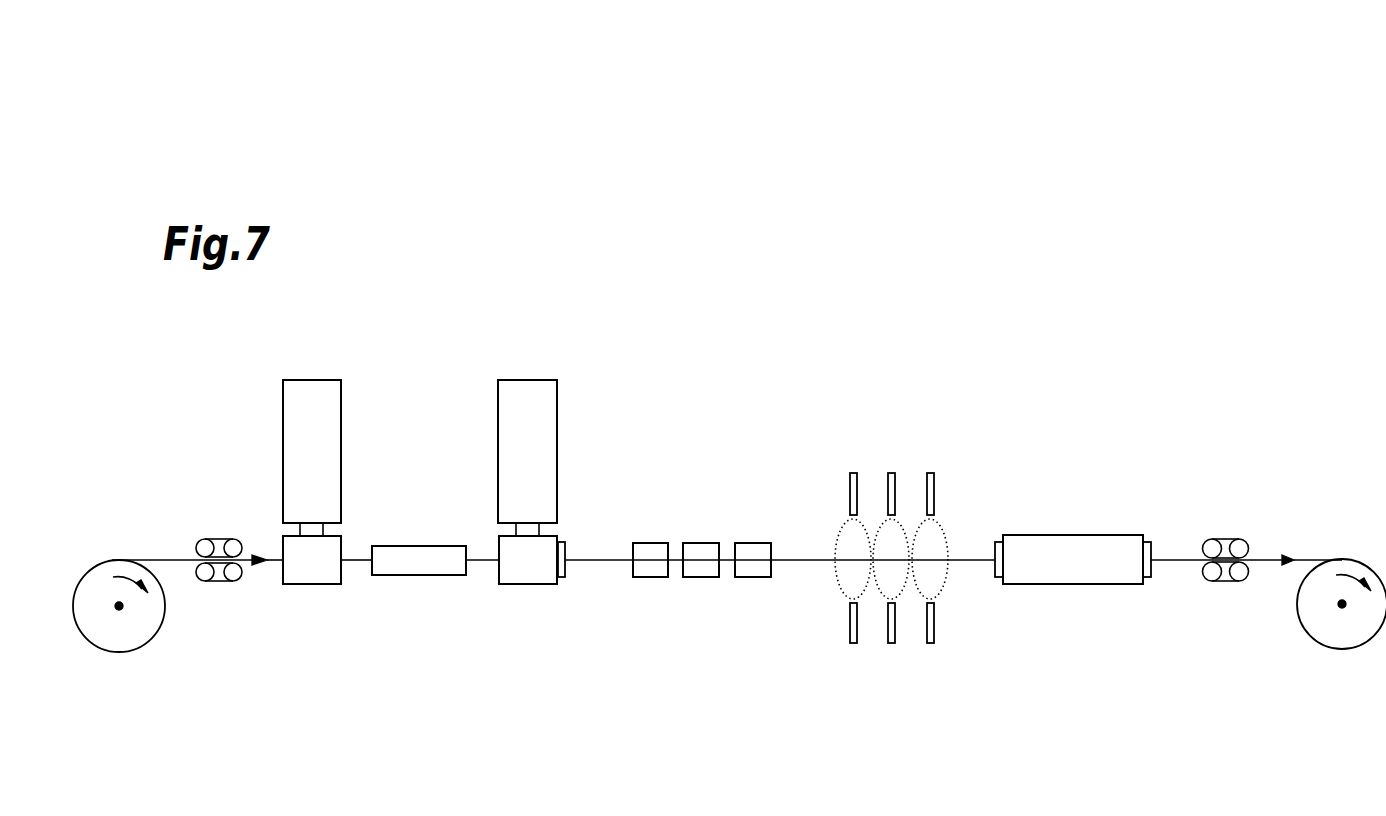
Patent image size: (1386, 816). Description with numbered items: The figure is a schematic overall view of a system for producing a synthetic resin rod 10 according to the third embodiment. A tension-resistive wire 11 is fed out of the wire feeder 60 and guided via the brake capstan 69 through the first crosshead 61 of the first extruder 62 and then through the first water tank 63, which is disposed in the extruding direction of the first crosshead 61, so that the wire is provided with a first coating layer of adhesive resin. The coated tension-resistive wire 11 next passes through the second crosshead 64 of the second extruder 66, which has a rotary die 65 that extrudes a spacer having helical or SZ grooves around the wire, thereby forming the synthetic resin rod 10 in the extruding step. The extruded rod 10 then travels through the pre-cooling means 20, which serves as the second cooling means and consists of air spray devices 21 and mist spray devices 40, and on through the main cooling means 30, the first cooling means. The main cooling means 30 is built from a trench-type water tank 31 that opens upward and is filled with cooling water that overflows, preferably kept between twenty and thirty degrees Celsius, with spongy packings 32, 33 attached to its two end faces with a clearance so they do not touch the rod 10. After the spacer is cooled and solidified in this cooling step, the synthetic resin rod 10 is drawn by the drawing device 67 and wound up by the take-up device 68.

The synthetic resin rod 10 is at (1173, 558).
The tension-resistive wire 11 is at (173, 560).
The pre-cooling means 20 is at (791, 568).
The air spray devices 21 is at (652, 577).
The main cooling means 30 is at (1072, 622).
The water tank 31 is at (1075, 584).
The spongy packing 32 is at (998, 582).
The spongy packing 33 is at (1131, 600).
The mist spray devices 40 is at (853, 472).
The wire feeder 60 is at (127, 642).
The first crosshead 61 is at (310, 578).
The first extruder 62 is at (335, 422).
The first water tank 63 is at (407, 576).
The second crosshead 64 is at (528, 579).
The rotary die 65 is at (562, 583).
The second extruder 66 is at (538, 395).
The drawing device 67 is at (1227, 575).
The take-up device 68 is at (1343, 640).
The brake capstan 69 is at (220, 575).